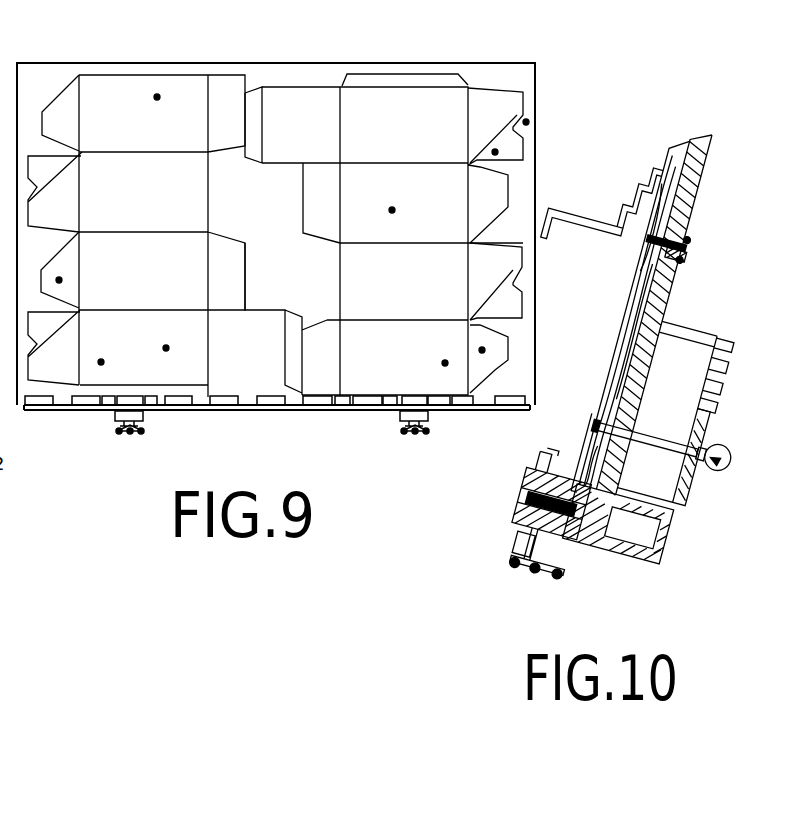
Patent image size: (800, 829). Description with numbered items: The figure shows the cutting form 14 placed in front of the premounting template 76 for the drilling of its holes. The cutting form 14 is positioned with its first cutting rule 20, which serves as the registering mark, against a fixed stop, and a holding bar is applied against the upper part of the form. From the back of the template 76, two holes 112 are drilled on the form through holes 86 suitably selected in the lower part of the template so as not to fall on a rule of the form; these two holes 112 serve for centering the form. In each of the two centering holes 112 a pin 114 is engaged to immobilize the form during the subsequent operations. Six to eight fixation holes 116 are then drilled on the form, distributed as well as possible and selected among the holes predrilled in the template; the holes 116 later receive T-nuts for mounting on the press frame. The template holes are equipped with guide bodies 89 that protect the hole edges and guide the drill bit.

In FIG. 9, the cutting form 14 is at (247, 372).
In FIG. 10, the cutting form 14 is at (637, 293).
In FIG. 9, the first cutting rule 20 is at (160, 416).
In FIG. 10, the premounting template 76 is at (665, 282).
In FIG. 10, the holes 86 is at (633, 428).
In FIG. 10, the guide bodies 89 is at (688, 239).
In FIG. 9, the centering holes 112 is at (101, 363).
In FIG. 10, the centering holes 112 is at (597, 427).
In FIG. 10, the pin 114 is at (731, 466).
In FIG. 9, the fixation holes 116 is at (392, 210).
In FIG. 10, the fixation holes 116 is at (648, 240).